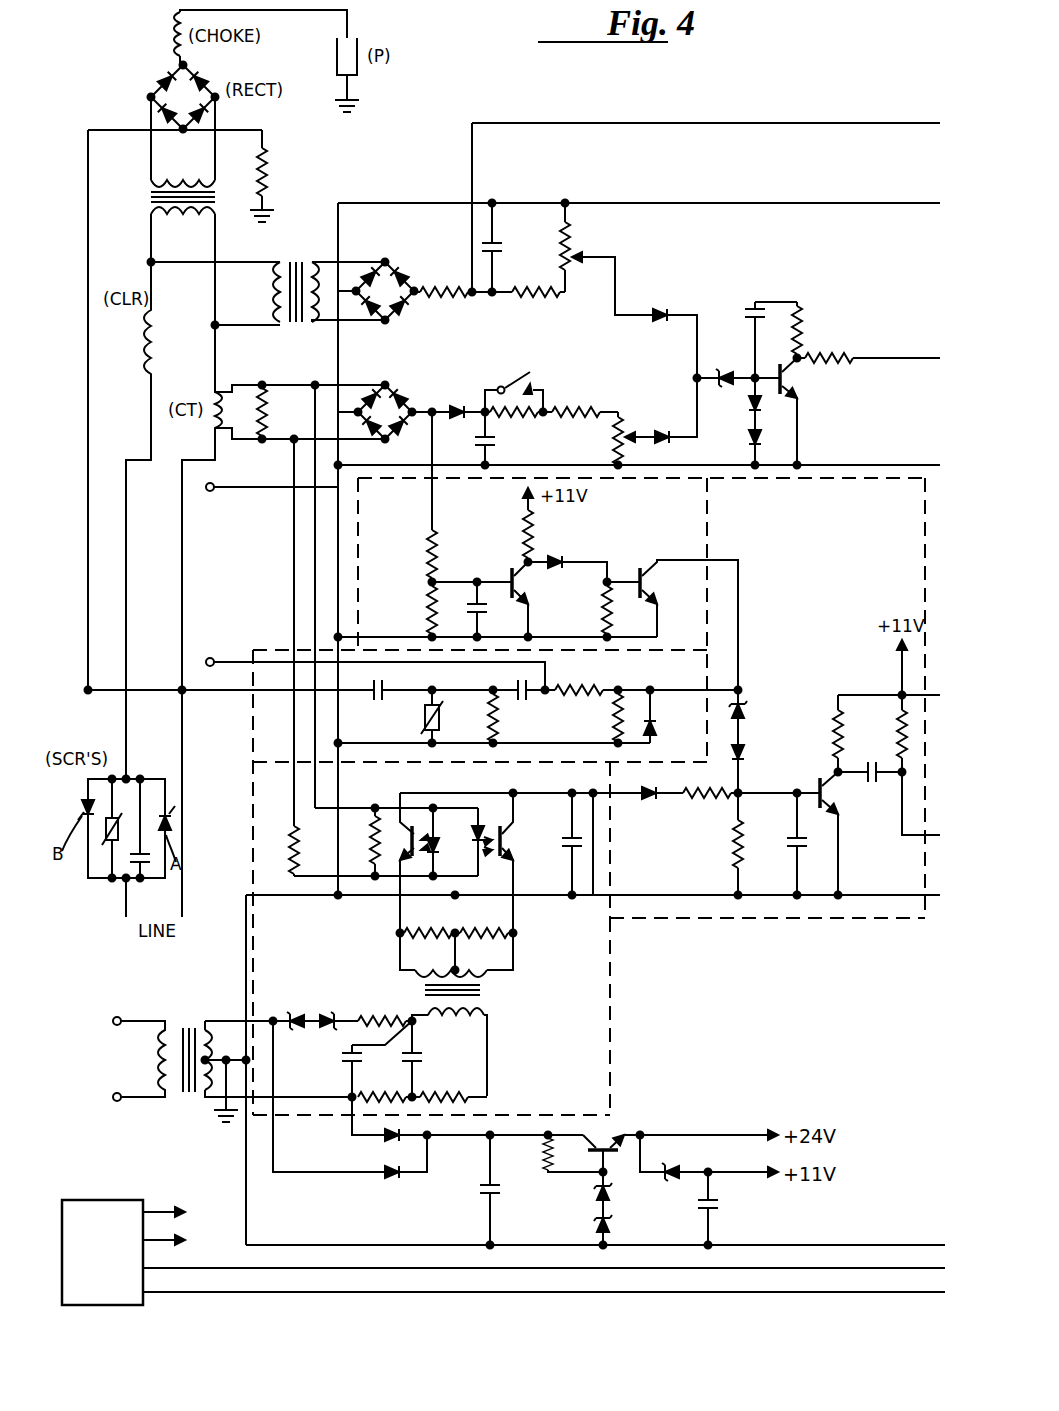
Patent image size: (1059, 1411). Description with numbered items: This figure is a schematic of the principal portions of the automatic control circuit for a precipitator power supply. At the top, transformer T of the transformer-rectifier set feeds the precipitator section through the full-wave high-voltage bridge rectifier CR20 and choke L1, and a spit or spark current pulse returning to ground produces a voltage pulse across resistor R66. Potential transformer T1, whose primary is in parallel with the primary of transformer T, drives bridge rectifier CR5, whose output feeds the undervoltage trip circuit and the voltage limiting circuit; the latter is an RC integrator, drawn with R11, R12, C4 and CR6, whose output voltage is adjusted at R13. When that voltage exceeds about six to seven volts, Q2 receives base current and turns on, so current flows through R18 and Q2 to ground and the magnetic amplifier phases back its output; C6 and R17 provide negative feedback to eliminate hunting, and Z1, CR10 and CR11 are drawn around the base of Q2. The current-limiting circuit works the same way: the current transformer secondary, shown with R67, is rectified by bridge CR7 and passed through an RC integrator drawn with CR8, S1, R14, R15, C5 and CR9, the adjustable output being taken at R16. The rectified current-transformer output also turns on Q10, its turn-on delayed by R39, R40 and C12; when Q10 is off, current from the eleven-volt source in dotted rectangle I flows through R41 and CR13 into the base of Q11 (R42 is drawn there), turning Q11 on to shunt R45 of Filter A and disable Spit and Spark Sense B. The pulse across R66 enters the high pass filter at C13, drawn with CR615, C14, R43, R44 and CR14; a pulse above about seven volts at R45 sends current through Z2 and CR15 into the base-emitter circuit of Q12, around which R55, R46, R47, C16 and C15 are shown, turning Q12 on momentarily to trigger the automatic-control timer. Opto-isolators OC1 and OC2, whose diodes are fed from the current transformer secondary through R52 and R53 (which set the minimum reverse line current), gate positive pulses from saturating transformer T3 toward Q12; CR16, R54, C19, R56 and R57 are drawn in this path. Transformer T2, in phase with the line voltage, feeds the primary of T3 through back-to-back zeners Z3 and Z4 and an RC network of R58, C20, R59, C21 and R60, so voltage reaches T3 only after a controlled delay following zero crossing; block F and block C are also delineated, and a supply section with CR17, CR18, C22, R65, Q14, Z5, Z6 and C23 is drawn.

The choke L1 is at (176, 18).
The full-wave high-voltage bridge rectifier CR20 is at (160, 96).
The resistor R66 is at (268, 176).
The transformer T is at (150, 206).
The potential transformer T1 is at (290, 254).
The bridge rectifier CR5 is at (397, 245).
The rectifier bridge CR7 is at (399, 373).
The resistor R67 is at (267, 408).
The resistor R11 is at (436, 298).
The resistor R12 is at (532, 298).
The adjustment resistor R13 is at (578, 258).
The capacitor C4 is at (493, 254).
The diode CR6 is at (664, 312).
The zener diode Z1 is at (731, 369).
The capacitor C6 is at (748, 309).
The resistor R17 is at (800, 320).
The resistor R18 is at (832, 357).
The transistor Q2 is at (794, 382).
The diode CR10 is at (754, 406).
The diode CR11 is at (754, 440).
The diode CR8 is at (457, 408).
The switch S1 is at (536, 385).
The resistor R14 is at (528, 416).
The resistor R15 is at (590, 409).
The adjustable resistor R16 is at (627, 434).
The diode CR9 is at (671, 432).
The capacitor C5 is at (492, 443).
The Spit and Spark Sense Inhibit I is at (710, 535).
The Filter A is at (250, 732).
The Spit and Spark Sense B is at (840, 918).
The block F is at (612, 1060).
The resistor R39 is at (430, 550).
The resistor R40 is at (430, 610).
The capacitor C12 is at (480, 606).
The transistor Q10 is at (522, 590).
The resistor R41 is at (521, 537).
The diode CR13 is at (556, 559).
The resistor R42 is at (610, 601).
The transistor Q11 is at (652, 591).
The capacitor C13 is at (378, 700).
The varistor CR615 is at (426, 708).
The capacitor C14 is at (524, 684).
The resistor R43 is at (496, 712).
The resistor R44 is at (572, 689).
The resistor R45 is at (615, 711).
The diode CR14 is at (654, 721).
The zener diode Z2 is at (742, 692).
The diode CR15 is at (745, 749).
The resistor R55 is at (734, 846).
The resistor R46 is at (832, 724).
The resistor R47 is at (899, 737).
The capacitor C16 is at (878, 783).
The transistor Q12 is at (819, 788).
The capacitor C15 is at (795, 848).
The diode CR16 is at (648, 800).
The resistor R54 is at (698, 801).
The capacitor C19 is at (570, 849).
The resistance R52 is at (294, 840).
The resistance R53 is at (372, 830).
The opto-isolator OC1 is at (422, 846).
The opto-isolator OC2 is at (504, 848).
The resistor R56 is at (437, 934).
The resistor R57 is at (500, 934).
The saturating transformer T3 is at (496, 996).
The zener diode Z3 is at (291, 1013).
The zener diode Z4 is at (322, 1012).
The resistor R58 is at (377, 1018).
The transformer T2 is at (186, 1027).
The capacitor C20 is at (345, 1060).
The resistor R59 is at (378, 1093).
The capacitor C21 is at (418, 1059).
The resistor R60 is at (440, 1098).
The diode CR17 is at (381, 1139).
The diode CR18 is at (382, 1179).
The capacitor C22 is at (482, 1190).
The resistor R65 is at (546, 1166).
The transistor Q14 is at (606, 1141).
The zener diode Z5 is at (597, 1196).
The zener diode Z6 is at (597, 1229).
The capacitor C23 is at (720, 1207).
The block C is at (503, 1252).